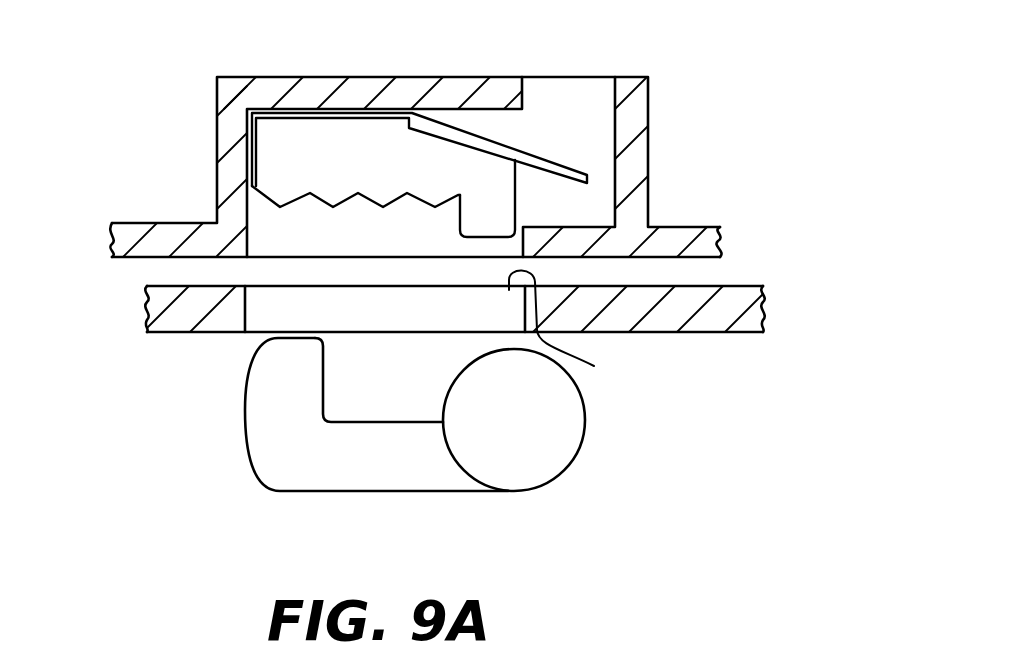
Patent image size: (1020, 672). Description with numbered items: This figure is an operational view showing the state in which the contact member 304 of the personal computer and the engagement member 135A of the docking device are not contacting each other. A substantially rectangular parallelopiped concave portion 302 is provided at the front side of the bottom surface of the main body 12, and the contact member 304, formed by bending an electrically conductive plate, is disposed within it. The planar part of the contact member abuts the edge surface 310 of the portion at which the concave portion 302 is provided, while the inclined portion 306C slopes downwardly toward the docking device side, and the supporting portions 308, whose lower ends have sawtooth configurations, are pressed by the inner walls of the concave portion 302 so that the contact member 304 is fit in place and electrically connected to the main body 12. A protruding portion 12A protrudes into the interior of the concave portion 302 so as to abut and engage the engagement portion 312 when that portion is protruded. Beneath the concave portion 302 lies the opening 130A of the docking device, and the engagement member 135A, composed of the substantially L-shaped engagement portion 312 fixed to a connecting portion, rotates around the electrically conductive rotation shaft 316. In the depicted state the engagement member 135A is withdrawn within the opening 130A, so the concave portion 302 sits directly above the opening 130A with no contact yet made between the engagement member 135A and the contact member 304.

The main body 12 is at (695, 227).
The protruding portion 12A is at (597, 227).
The opening 130A is at (592, 330).
The engagement member 135A is at (514, 512).
The concave portion 302 is at (272, 258).
The contact member 304 is at (600, 165).
The inclined portion 306C is at (533, 158).
The supporting portion 308 is at (273, 140).
The edge surface 310 is at (458, 90).
The engagement portion 312 is at (253, 455).
The rotation shaft 316 is at (563, 442).